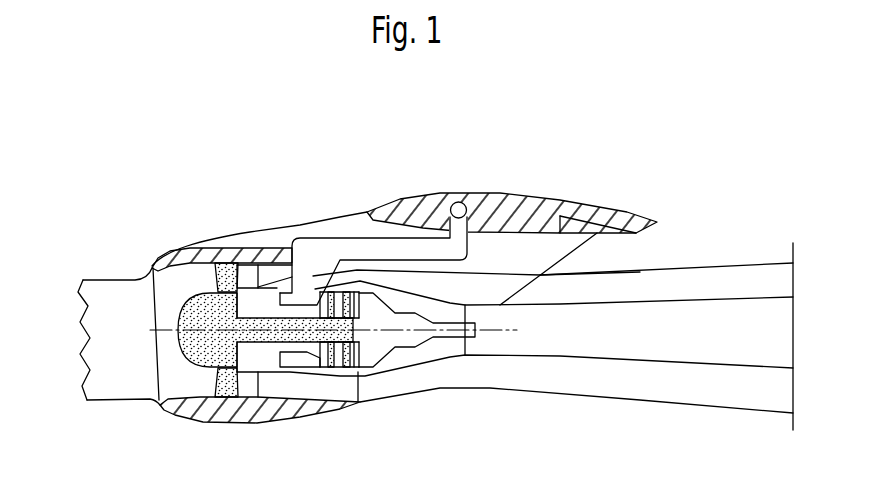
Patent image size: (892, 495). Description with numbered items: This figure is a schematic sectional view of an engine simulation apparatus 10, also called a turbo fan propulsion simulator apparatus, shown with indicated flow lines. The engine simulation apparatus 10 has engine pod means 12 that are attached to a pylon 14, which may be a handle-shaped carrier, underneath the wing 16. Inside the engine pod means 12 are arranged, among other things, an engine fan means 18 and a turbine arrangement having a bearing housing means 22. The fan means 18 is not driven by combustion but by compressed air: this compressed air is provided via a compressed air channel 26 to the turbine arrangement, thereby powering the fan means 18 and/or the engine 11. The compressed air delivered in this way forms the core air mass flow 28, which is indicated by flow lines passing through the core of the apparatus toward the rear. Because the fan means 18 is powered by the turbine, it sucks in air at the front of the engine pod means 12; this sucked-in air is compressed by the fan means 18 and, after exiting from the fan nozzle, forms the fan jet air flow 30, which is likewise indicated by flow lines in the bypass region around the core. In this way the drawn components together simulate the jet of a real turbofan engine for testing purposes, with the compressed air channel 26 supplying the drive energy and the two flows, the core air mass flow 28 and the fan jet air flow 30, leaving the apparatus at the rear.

The engine simulation apparatus 10 is at (441, 176).
The engine 11 is at (130, 252).
The engine pod means 12 is at (258, 412).
The pylon 14 is at (355, 228).
The wing 16 is at (497, 203).
The engine fan means 18 is at (226, 263).
The bearing housing means 22 is at (342, 291).
The compressed air channel 26 is at (313, 248).
The core air mass flow 28 is at (738, 317).
The fan jet air flow 30 is at (695, 280).